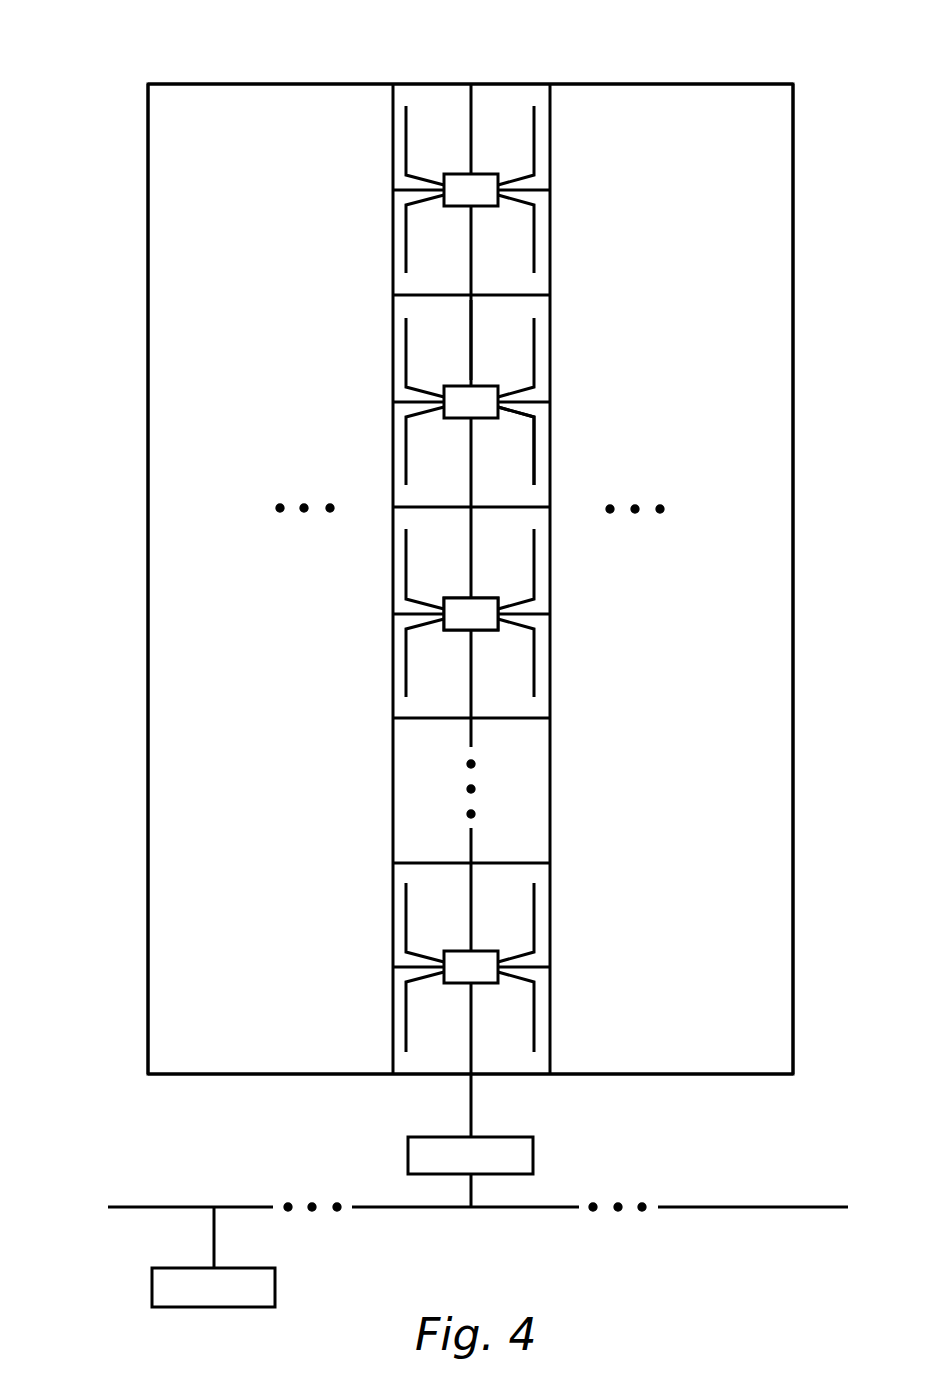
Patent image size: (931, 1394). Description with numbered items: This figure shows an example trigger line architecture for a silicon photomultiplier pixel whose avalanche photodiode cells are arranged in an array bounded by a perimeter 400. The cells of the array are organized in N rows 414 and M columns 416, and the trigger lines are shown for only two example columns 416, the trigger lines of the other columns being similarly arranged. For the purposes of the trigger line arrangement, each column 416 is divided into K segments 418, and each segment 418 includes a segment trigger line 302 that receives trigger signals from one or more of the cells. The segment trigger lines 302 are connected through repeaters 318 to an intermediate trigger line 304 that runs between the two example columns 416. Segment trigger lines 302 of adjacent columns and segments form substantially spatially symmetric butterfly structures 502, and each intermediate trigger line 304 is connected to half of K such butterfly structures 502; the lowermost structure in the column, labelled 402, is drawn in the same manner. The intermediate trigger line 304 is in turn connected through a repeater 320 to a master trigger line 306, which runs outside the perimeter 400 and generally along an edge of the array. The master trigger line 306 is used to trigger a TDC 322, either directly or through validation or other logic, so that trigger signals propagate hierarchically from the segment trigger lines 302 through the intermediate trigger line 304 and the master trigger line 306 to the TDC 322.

The boundary or perimeter 400 is at (148, 616).
The rows 414 is at (434, 582).
The columns 416 is at (588, 13).
The segments 418 is at (387, 1017).
The butterfly structures 502 is at (566, 170).
The intermediate trigger line 304 is at (473, 348).
The segment trigger line 302 is at (534, 452).
The repeater 318 is at (485, 598).
The pixel 402 is at (575, 940).
The repeater 320 is at (533, 1155).
The master trigger line 306 is at (147, 1207).
The TDC 322 is at (277, 1287).